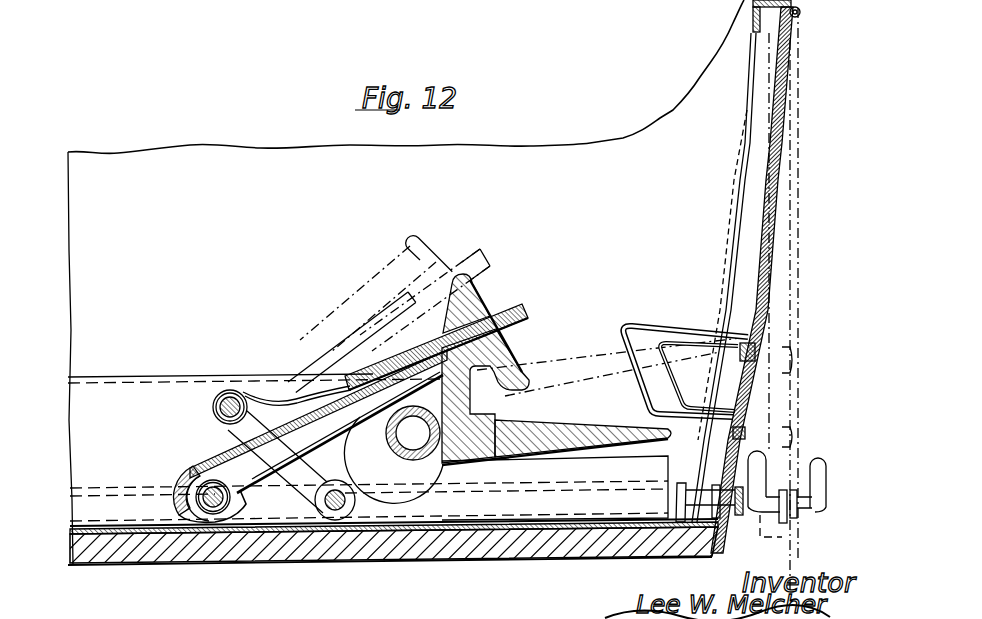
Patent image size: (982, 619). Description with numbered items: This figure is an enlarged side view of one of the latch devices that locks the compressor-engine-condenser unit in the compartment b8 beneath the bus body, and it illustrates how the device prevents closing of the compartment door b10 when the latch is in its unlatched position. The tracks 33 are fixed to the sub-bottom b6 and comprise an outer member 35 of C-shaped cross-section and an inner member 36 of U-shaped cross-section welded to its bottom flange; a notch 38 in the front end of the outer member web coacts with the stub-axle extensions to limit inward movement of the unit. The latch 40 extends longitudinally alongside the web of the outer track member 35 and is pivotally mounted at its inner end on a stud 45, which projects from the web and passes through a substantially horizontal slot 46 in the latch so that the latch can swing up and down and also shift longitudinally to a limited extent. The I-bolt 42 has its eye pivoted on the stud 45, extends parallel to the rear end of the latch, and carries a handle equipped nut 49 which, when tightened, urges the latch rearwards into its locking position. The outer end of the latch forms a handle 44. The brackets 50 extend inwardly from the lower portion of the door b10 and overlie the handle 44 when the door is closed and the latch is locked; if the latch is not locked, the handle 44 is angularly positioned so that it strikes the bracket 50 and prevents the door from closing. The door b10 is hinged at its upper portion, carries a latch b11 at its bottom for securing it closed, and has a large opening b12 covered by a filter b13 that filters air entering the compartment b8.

The tracks 33 is at (154, 386).
The outer track member 35 is at (202, 394).
The inner track member 36 is at (470, 492).
The sub-bottom b6 is at (264, 564).
The notch 38 is at (303, 496).
The latch 40 is at (308, 404).
The I-bolt 42 is at (528, 304).
The handle 44 is at (562, 427).
The stud 45 is at (213, 507).
The slot 46 is at (200, 476).
The handle equipped nut 49 is at (510, 342).
The bracket 50 is at (662, 326).
The compartment b8 is at (389, 314).
The door b10 is at (791, 33).
The opening b12 is at (784, 50).
The filter b13 is at (779, 78).
The latch b11 is at (763, 463).